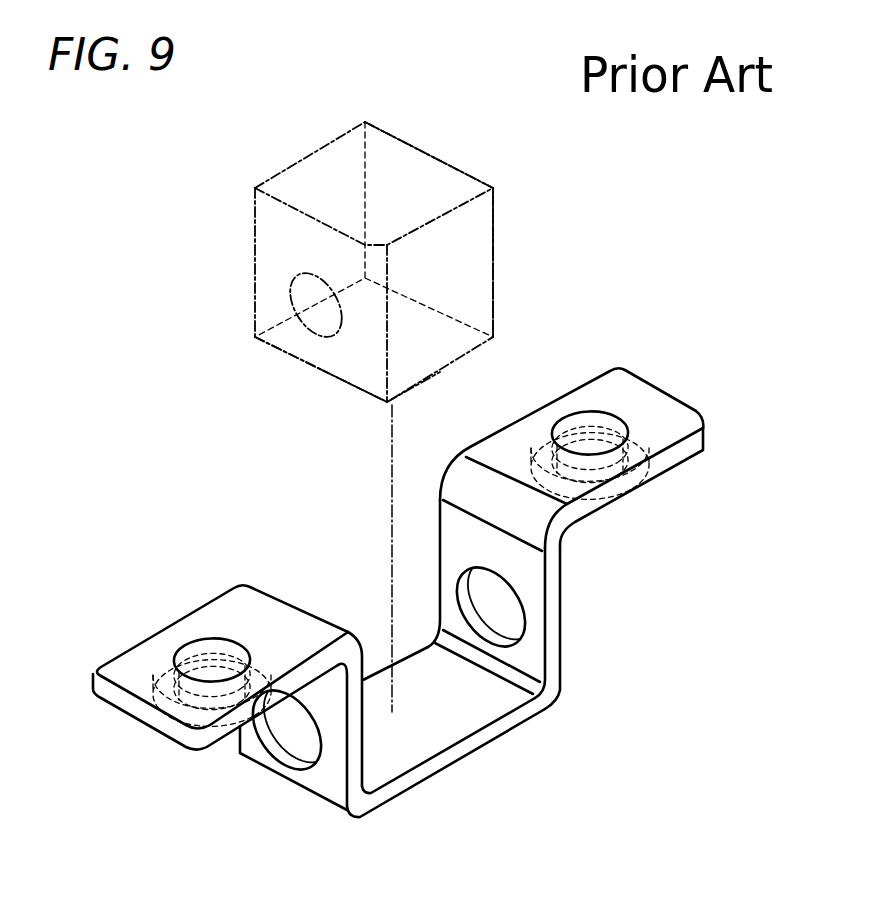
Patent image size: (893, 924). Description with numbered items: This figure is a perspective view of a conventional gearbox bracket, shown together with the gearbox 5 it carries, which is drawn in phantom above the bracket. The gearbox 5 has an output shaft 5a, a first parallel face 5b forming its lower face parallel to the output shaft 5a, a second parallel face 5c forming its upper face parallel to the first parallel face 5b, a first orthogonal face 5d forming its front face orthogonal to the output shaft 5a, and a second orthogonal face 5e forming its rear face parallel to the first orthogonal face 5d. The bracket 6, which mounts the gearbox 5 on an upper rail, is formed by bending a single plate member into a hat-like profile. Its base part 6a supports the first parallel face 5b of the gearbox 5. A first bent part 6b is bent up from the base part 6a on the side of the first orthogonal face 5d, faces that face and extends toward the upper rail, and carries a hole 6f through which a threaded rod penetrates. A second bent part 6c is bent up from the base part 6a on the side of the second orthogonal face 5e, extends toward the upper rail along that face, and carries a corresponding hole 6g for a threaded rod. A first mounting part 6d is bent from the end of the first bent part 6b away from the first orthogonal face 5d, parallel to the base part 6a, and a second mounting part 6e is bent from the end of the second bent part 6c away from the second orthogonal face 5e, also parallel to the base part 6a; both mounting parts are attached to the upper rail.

The gearbox 5 is at (370, 255).
The output shaft 5a is at (296, 284).
The first parallel face 5b is at (364, 408).
The second parallel face 5c is at (477, 177).
The first orthogonal face 5d is at (320, 369).
The second orthogonal face 5e is at (478, 258).
The bracket 6 is at (436, 617).
The base part 6a is at (441, 740).
The first bent part 6b is at (300, 765).
The second bent part 6c is at (530, 604).
The first mounting part 6d is at (165, 646).
The second mounting part 6e is at (670, 412).
The hole 6f is at (300, 757).
The hole 6g is at (519, 645).